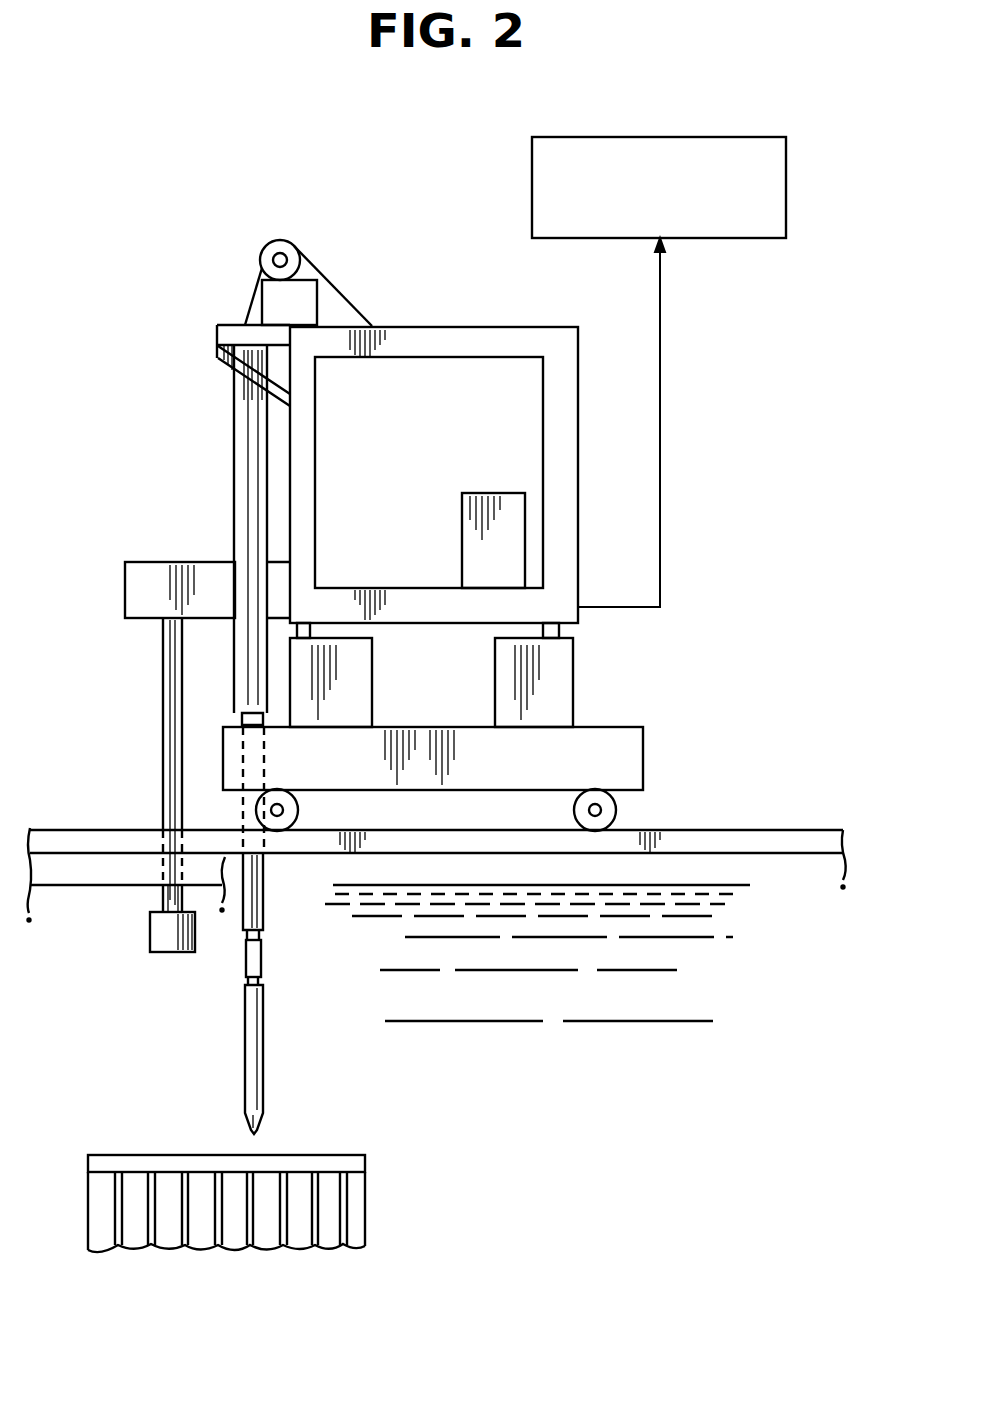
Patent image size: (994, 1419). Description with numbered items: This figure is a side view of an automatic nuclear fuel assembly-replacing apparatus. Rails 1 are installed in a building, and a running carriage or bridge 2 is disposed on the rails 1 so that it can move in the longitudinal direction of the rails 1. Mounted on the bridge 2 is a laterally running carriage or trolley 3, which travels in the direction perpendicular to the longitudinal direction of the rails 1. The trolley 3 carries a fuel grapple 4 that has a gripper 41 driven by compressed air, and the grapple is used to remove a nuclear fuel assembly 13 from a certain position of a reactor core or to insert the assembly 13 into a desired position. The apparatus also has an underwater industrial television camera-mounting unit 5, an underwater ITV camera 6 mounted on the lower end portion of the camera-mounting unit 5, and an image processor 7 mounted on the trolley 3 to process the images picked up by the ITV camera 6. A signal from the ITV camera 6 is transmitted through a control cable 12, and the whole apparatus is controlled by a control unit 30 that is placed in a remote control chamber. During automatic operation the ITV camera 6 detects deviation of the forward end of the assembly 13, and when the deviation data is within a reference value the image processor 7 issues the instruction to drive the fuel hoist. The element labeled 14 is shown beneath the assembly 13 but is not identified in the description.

The rails 1 is at (697, 830).
The bridge 2 is at (645, 748).
The trolley 3 is at (429, 328).
The fuel grapple 4 is at (265, 900).
The camera-mounting unit 5 is at (163, 742).
The ITV camera 6 is at (150, 940).
The image processor 7 is at (462, 522).
The control cable 12 is at (660, 472).
The nuclear fuel assembly 13 is at (265, 1076).
The workpiece 14 is at (363, 1192).
The control unit 30 is at (741, 238).
The gripper 41 is at (262, 955).